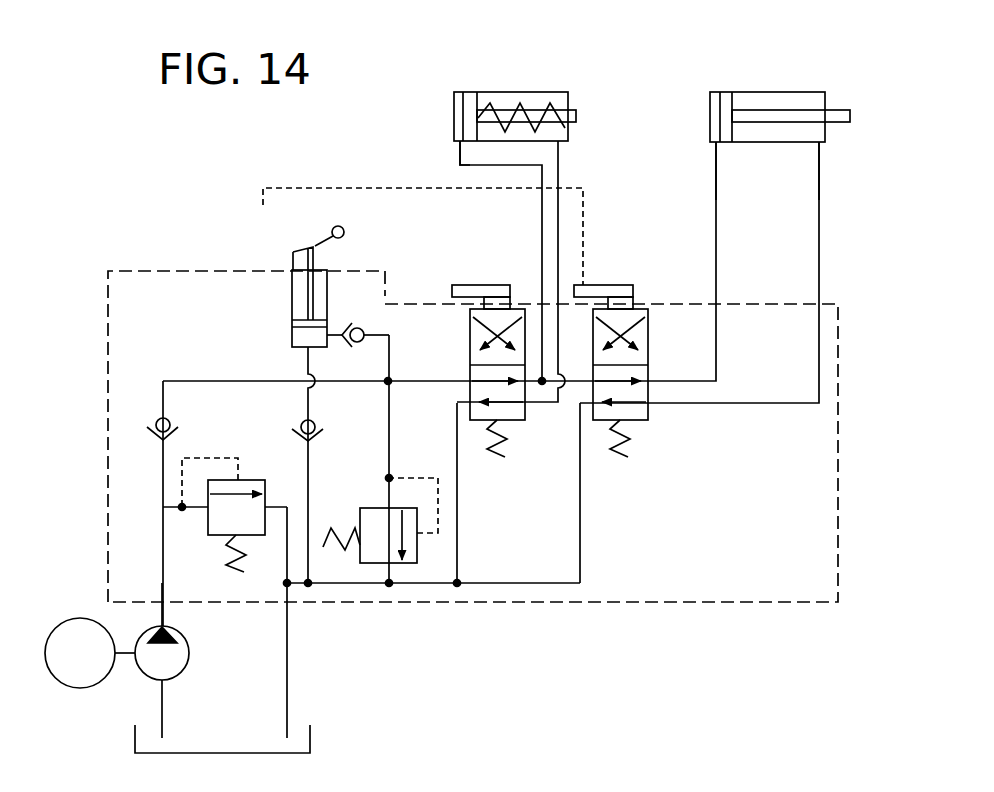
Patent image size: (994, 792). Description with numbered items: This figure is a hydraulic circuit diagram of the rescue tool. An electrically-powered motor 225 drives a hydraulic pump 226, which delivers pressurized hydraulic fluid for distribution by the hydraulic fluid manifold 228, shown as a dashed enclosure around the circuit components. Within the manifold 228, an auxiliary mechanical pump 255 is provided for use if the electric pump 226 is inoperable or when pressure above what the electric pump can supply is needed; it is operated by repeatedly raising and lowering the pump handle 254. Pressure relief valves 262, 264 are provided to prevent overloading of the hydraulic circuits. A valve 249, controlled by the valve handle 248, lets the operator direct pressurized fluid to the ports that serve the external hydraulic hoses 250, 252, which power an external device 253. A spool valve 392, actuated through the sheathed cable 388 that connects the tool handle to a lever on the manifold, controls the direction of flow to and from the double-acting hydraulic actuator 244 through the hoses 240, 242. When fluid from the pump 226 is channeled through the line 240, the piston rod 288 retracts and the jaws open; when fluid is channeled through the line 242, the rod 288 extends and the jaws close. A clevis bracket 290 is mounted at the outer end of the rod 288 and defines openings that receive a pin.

The electrically-powered motor 225 is at (80, 688).
The hydraulic pump 226 is at (189, 652).
The hydraulic fluid manifold 228 is at (200, 268).
The hose 240 is at (818, 188).
The hose 242 is at (714, 190).
The double-acting hydraulic actuator 244 is at (765, 97).
The valve handle 248 is at (460, 285).
The valve 249 is at (470, 362).
The external hydraulic hose 250 is at (559, 152).
The external hydraulic hose 252 is at (459, 148).
The external device 253 is at (483, 92).
The pump handle 254 is at (330, 237).
The auxiliary mechanical pump 255 is at (292, 303).
The pressure relief valve 262 is at (250, 480).
The pressure relief valve 264 is at (373, 508).
The piston rod 288 is at (845, 110).
The clevis bracket 290 is at (597, 285).
The sheathed cable 388 is at (373, 187).
The spool valve 392 is at (648, 362).